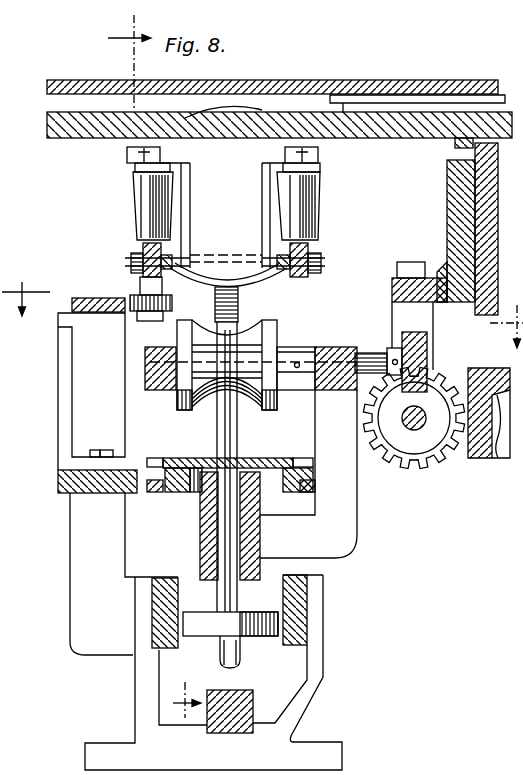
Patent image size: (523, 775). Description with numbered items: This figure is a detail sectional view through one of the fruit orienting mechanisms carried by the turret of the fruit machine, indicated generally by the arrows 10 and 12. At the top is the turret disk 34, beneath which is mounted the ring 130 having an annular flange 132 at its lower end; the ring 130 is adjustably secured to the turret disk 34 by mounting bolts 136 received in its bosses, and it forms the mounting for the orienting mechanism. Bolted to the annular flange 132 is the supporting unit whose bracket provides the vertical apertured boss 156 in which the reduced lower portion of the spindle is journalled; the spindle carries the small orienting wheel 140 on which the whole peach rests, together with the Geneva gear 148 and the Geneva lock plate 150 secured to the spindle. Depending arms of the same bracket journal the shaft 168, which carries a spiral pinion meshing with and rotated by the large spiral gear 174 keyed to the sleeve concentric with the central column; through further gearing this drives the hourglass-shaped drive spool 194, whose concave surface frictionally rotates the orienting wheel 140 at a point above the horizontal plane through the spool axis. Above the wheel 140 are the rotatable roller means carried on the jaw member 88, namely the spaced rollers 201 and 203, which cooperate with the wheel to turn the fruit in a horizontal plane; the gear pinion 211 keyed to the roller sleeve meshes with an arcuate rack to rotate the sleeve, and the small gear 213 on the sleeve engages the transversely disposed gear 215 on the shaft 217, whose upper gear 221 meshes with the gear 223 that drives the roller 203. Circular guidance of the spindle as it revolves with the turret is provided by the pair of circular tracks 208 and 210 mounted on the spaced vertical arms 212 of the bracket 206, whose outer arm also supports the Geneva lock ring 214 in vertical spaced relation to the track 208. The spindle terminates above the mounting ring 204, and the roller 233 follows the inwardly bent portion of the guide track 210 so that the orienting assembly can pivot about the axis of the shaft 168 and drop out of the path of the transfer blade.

The direction arrow 10 is at (3, 280).
The section line 12 is at (78, 31).
The turret disk 34 is at (402, 125).
The jaw member 88 is at (225, 148).
The ring 130 is at (460, 183).
The annular flange 132 is at (392, 290).
The mounting bolts 136 is at (392, 318).
The orienting wheel 140 is at (238, 302).
The Geneva gear 148 is at (270, 470).
The Geneva lock plate 150 is at (298, 494).
The apertured boss 156 is at (205, 542).
The shaft 168 is at (420, 430).
The spiral gear 174 is at (478, 460).
The drive spool 194 is at (180, 408).
The roller 201 is at (127, 185).
The roller 203 is at (322, 205).
The mounting ring 204 is at (234, 714).
The bracket 206 is at (98, 757).
The circular track 208 is at (165, 620).
The guide track 210 is at (300, 598).
The gear pinion 211 is at (143, 316).
The vertical arms 212 is at (148, 695).
The small gear 213 is at (131, 258).
The Geneva lock ring 214 is at (80, 492).
The gear 215 is at (143, 270).
The shaft 217 is at (183, 262).
The gear 221 is at (316, 244).
The gear 223 is at (325, 263).
The roller 233 is at (263, 637).